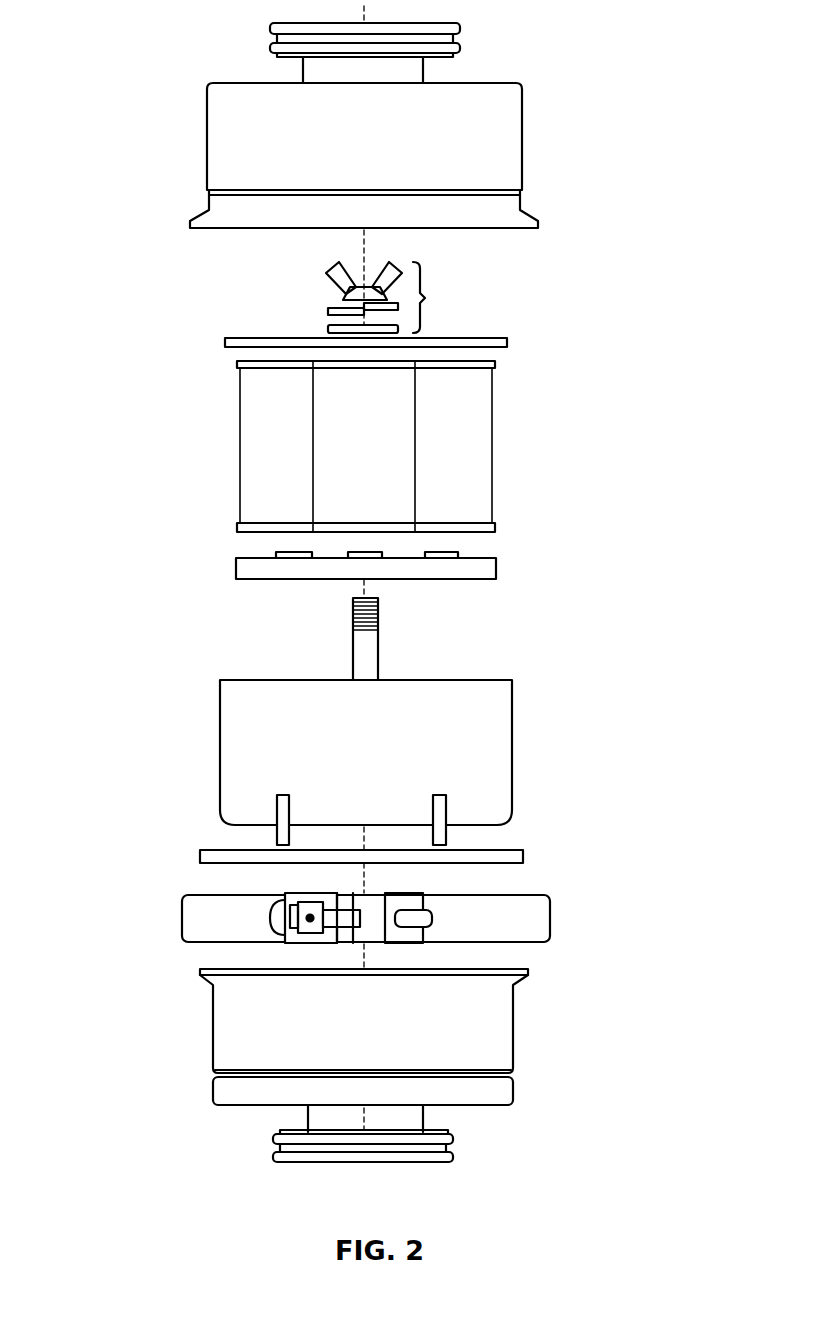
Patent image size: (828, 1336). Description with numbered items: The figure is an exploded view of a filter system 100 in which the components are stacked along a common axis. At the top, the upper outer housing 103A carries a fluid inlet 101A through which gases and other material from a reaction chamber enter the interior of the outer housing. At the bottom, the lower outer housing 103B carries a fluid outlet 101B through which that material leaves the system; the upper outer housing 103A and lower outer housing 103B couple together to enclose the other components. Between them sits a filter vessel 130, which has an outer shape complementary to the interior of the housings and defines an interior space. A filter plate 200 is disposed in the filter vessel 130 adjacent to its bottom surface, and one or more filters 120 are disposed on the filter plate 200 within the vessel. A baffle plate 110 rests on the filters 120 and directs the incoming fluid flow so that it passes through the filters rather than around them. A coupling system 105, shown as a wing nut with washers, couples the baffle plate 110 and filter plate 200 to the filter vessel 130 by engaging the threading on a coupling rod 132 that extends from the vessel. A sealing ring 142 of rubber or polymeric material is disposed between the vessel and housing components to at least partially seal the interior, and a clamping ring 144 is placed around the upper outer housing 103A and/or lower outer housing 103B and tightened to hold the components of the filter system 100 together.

The filter system 100 is at (80, 147).
The fluid inlet 101A is at (454, 20).
The upper outer housing 103A is at (523, 143).
The coupling system 105 is at (425, 298).
The baffle plate 110 is at (508, 338).
The filters 120 is at (297, 392).
The filter plate 200 is at (499, 563).
The coupling rod 132 is at (380, 648).
The filter vessel 130 is at (513, 730).
The sealing ring 142 is at (524, 856).
The clamping ring 144 is at (551, 915).
The lower outer housing 103B is at (515, 1022).
The fluid outlet 101B is at (408, 1161).